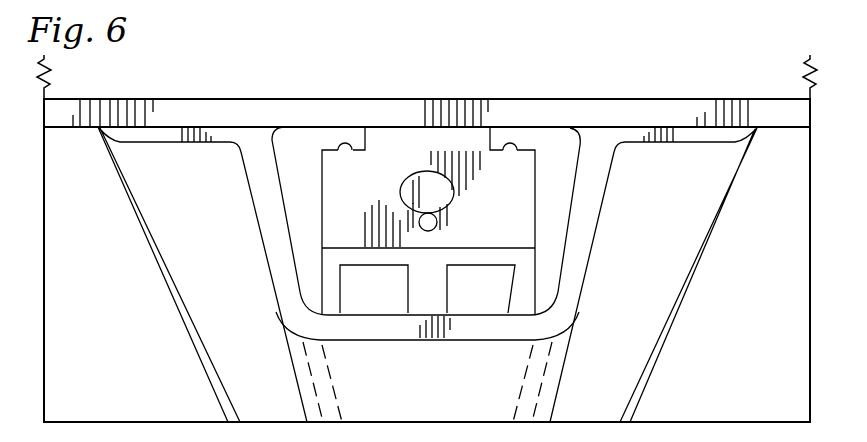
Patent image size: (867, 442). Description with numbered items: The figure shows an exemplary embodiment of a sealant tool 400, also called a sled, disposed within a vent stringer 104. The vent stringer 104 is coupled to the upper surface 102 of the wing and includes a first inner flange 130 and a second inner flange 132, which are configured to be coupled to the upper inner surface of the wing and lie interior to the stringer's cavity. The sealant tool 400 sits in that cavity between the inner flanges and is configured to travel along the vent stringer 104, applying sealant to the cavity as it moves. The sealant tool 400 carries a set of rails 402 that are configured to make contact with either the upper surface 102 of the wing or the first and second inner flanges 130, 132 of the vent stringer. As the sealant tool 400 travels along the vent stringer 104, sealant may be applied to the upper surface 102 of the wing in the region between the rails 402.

The upper surface of the wing 102 is at (680, 110).
The vent stringer 104 is at (760, 300).
The first inner flange 130 is at (313, 135).
The second inner flange 132 is at (538, 135).
The sealant tool 400 is at (395, 165).
The rails 402 is at (348, 146).